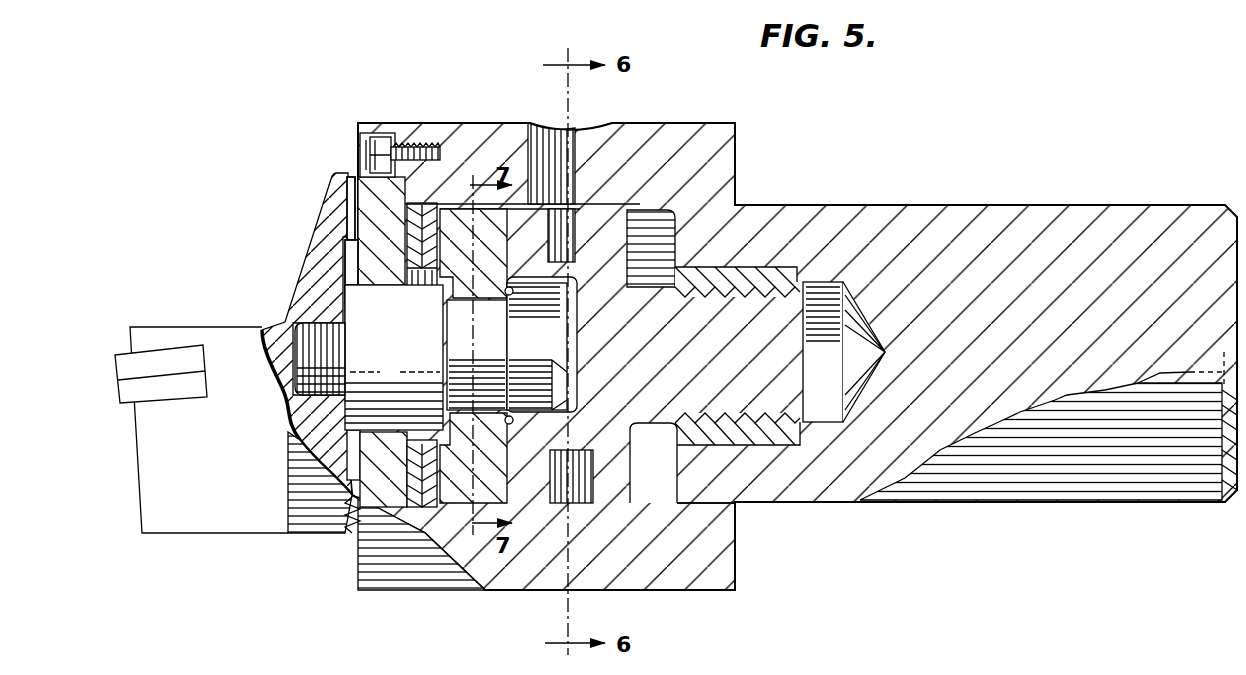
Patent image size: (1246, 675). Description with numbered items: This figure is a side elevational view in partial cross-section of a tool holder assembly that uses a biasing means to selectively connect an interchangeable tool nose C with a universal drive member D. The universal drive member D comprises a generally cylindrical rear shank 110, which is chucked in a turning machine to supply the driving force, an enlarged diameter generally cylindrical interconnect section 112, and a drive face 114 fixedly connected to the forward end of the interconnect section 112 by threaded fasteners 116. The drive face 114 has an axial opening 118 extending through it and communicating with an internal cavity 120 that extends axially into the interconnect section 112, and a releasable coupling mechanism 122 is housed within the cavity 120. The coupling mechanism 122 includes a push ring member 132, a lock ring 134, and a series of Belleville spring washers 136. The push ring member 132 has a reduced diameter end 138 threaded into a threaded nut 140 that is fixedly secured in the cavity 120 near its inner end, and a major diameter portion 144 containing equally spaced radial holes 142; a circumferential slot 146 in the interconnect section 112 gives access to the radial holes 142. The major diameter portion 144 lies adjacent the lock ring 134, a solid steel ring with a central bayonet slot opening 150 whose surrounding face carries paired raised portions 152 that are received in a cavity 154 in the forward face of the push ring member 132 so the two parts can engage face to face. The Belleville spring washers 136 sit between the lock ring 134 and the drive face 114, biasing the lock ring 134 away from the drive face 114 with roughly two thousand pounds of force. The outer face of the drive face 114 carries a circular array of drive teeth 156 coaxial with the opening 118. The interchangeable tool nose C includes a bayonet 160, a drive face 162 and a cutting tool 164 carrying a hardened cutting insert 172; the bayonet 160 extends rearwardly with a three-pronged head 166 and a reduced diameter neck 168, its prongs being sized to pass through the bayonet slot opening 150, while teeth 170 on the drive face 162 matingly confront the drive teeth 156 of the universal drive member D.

The rear shank 110 is at (998, 492).
The interconnect section 112 is at (706, 548).
The drive face 114 is at (391, 572).
The threaded fasteners 116 is at (362, 160).
The axial opening 118 is at (384, 296).
The internal cavity 120 is at (642, 505).
The releasable coupling mechanism 122 is at (530, 505).
The push ring member 132 is at (663, 351).
The lock ring 134 is at (453, 255).
The Belleville spring washers 136 is at (407, 505).
The reduced diameter end 138 is at (788, 387).
The threaded nut 140 is at (745, 432).
The radial holes 142 is at (578, 232).
The major diameter portion 144 is at (628, 495).
The circumferential slot 146 is at (612, 150).
The bayonet slot opening 150 is at (460, 405).
The raised portions 152 is at (513, 297).
The cavity 154 is at (557, 433).
The drive teeth 156 is at (360, 549).
The bayonet 160 is at (412, 357).
The drive face 162 is at (352, 167).
The cutting tool 164 is at (235, 311).
The three-pronged head 166 is at (514, 347).
The reduced diameter neck 168 is at (453, 357).
The teeth 170 is at (346, 528).
The cutting insert 172 is at (150, 328).
The universal drive member D is at (767, 172).
The interchangeable tool nose C is at (276, 291).